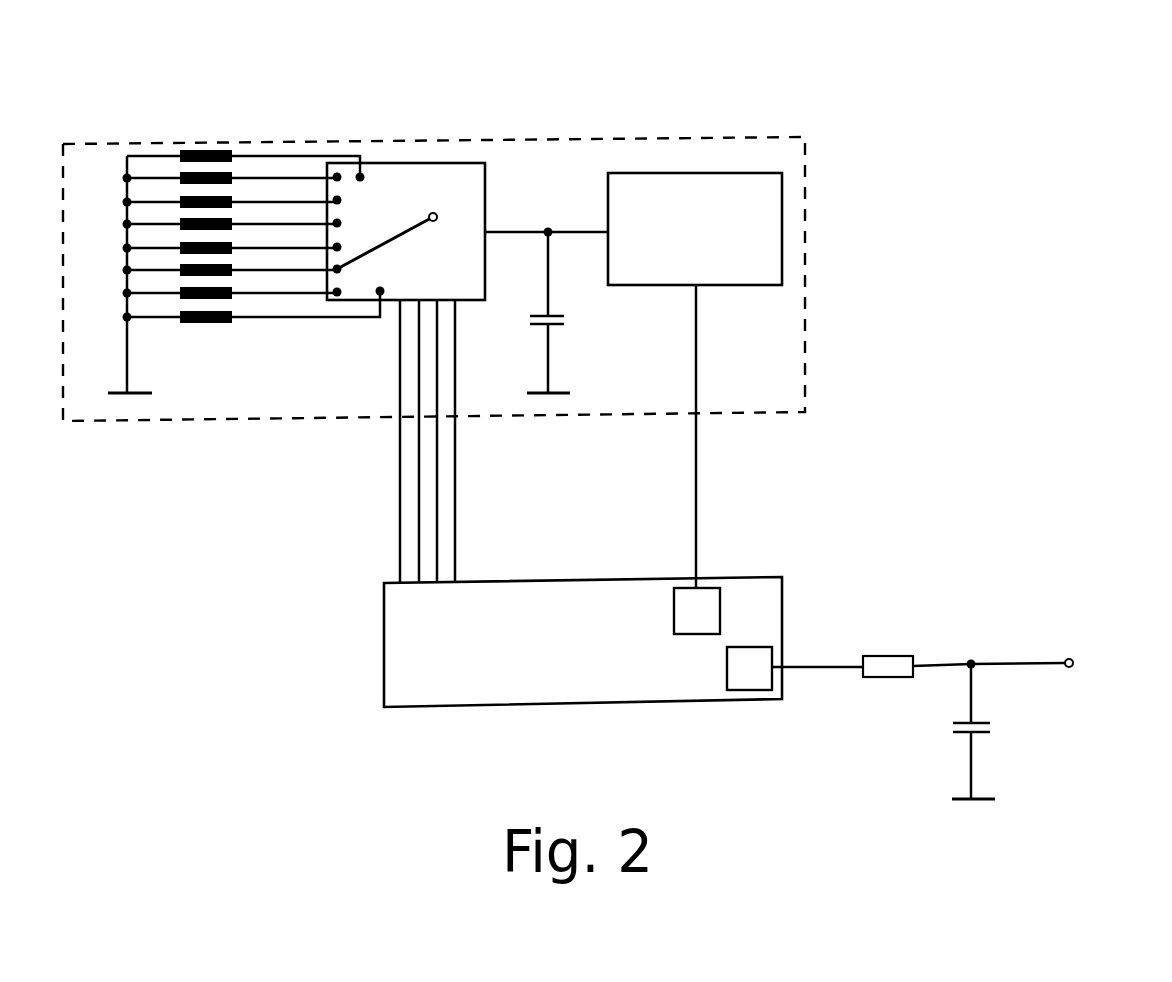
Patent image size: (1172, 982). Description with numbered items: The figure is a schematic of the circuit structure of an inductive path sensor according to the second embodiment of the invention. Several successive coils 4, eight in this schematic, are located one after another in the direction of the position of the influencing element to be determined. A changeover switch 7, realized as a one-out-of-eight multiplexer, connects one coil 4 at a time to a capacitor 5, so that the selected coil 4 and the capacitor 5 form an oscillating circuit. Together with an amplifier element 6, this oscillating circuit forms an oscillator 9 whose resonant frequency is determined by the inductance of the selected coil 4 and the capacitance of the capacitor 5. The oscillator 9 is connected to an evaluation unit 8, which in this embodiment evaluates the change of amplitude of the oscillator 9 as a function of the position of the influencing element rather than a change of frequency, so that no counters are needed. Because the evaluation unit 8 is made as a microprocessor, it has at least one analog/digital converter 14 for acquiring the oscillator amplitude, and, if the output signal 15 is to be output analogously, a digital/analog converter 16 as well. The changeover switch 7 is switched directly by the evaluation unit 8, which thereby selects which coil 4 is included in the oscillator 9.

The coils 4 is at (218, 202).
The changeover switch 7 is at (410, 188).
The capacitor 5 is at (560, 324).
The amplifier element 6 is at (677, 245).
The oscillator 9 is at (762, 232).
The evaluation unit 8 is at (547, 652).
The analog/digital converter 14 is at (707, 604).
The digital/analog converter 16 is at (745, 681).
The output signal 15 is at (1073, 660).